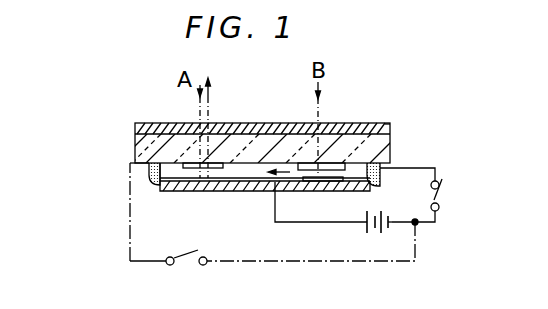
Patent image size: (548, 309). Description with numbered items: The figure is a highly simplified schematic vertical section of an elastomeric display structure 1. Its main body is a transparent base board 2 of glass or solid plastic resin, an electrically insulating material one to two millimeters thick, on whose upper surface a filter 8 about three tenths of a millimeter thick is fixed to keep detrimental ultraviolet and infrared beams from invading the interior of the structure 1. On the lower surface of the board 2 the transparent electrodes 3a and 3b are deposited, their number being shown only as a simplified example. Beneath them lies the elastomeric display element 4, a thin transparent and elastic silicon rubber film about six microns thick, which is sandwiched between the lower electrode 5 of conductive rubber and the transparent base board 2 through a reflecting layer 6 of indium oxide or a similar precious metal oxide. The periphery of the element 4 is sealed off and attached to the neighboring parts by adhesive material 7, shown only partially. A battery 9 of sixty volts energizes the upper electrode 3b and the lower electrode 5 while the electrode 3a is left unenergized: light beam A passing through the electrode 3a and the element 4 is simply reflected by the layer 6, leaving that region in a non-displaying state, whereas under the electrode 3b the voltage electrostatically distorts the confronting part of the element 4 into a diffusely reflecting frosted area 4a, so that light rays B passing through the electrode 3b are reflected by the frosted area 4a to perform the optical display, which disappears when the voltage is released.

The elastomeric display structure 1 is at (135, 130).
The transparent base board 2 is at (133, 142).
The transparent electrode 3a is at (220, 160).
The transparent electrode 3b is at (332, 163).
The elastomeric display element 4 is at (173, 172).
The frosted area 4a is at (300, 178).
The lower electrode 5 is at (237, 185).
The reflecting layer 6 is at (197, 185).
The adhesive material 7 is at (151, 181).
The filter 8 is at (390, 128).
The battery 9 is at (366, 226).